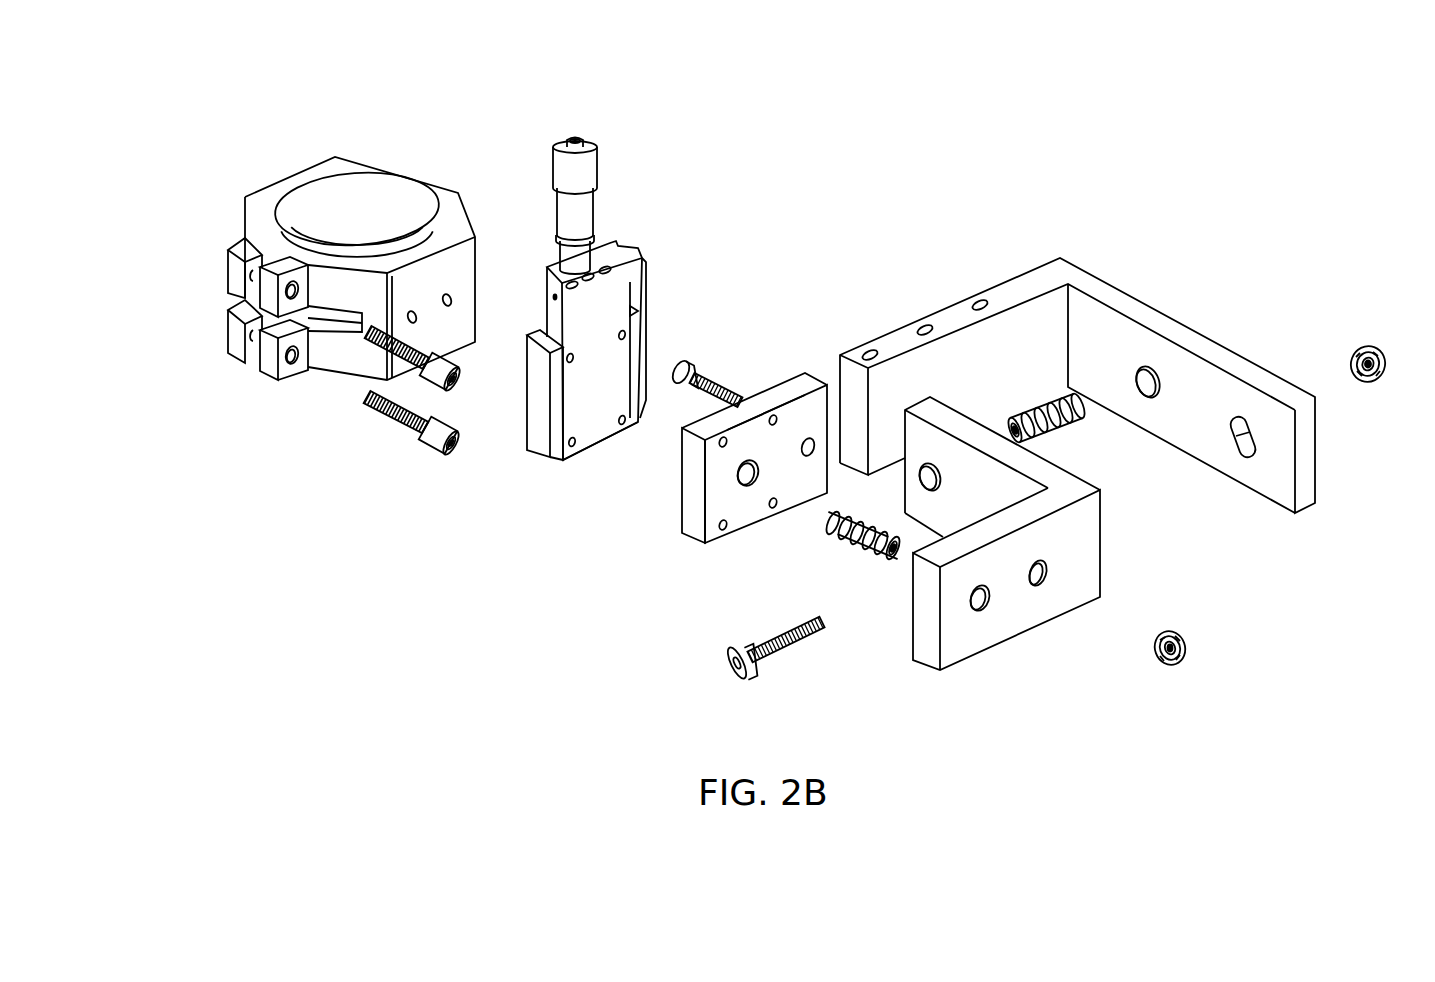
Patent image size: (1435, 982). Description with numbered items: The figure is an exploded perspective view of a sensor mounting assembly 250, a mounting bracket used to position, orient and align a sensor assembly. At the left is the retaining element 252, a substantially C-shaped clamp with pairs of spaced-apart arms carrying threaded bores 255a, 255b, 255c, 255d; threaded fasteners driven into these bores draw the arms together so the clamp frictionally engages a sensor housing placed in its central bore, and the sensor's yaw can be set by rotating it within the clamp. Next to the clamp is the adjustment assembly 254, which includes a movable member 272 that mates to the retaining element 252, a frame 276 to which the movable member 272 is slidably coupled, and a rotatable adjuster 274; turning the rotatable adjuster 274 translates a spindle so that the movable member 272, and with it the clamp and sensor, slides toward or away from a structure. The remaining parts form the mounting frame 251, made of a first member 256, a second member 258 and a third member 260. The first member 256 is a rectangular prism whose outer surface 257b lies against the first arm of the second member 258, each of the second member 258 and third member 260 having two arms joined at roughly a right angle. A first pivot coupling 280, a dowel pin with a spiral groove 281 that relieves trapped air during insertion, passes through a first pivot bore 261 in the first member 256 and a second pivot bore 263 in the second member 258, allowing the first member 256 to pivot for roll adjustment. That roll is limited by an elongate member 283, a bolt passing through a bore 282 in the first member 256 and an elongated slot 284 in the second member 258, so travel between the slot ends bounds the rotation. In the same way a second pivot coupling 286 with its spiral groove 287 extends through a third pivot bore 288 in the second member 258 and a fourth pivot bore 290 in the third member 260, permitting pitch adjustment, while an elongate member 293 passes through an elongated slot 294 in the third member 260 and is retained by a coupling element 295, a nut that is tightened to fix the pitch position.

The sensor mounting assembly 250 is at (1235, 117).
The mounting frame 251 is at (1165, 265).
The retaining element 252 is at (433, 168).
The adjustment assembly 254 is at (638, 245).
The threaded bore 255a is at (293, 281).
The threaded bore 255b is at (252, 278).
The threaded bore 255c is at (302, 369).
The threaded bore 255d is at (252, 345).
The first member 256 is at (687, 542).
The outer surface 257b is at (785, 417).
The second member 258 is at (915, 672).
The third member 260 is at (1082, 262).
The first pivot bore 261 is at (745, 483).
The second pivot bore 263 is at (987, 610).
The movable member 272 is at (538, 446).
The rotatable adjuster 274 is at (600, 158).
The frame 276 is at (590, 414).
The first pivot coupling 280 is at (832, 538).
The spiral groove 281 is at (873, 546).
The bore 282 is at (811, 440).
The elongate member 283 is at (675, 367).
The elongated slot 284 is at (1050, 580).
The second pivot coupling 286 is at (1057, 452).
The spiral groove 287 is at (1075, 420).
The third pivot bore 288 is at (933, 462).
The fourth pivot bore 290 is at (1143, 366).
The elongate member 293 is at (734, 673).
The elongated slot 294 is at (1253, 453).
The coupling element 295 is at (1370, 354).